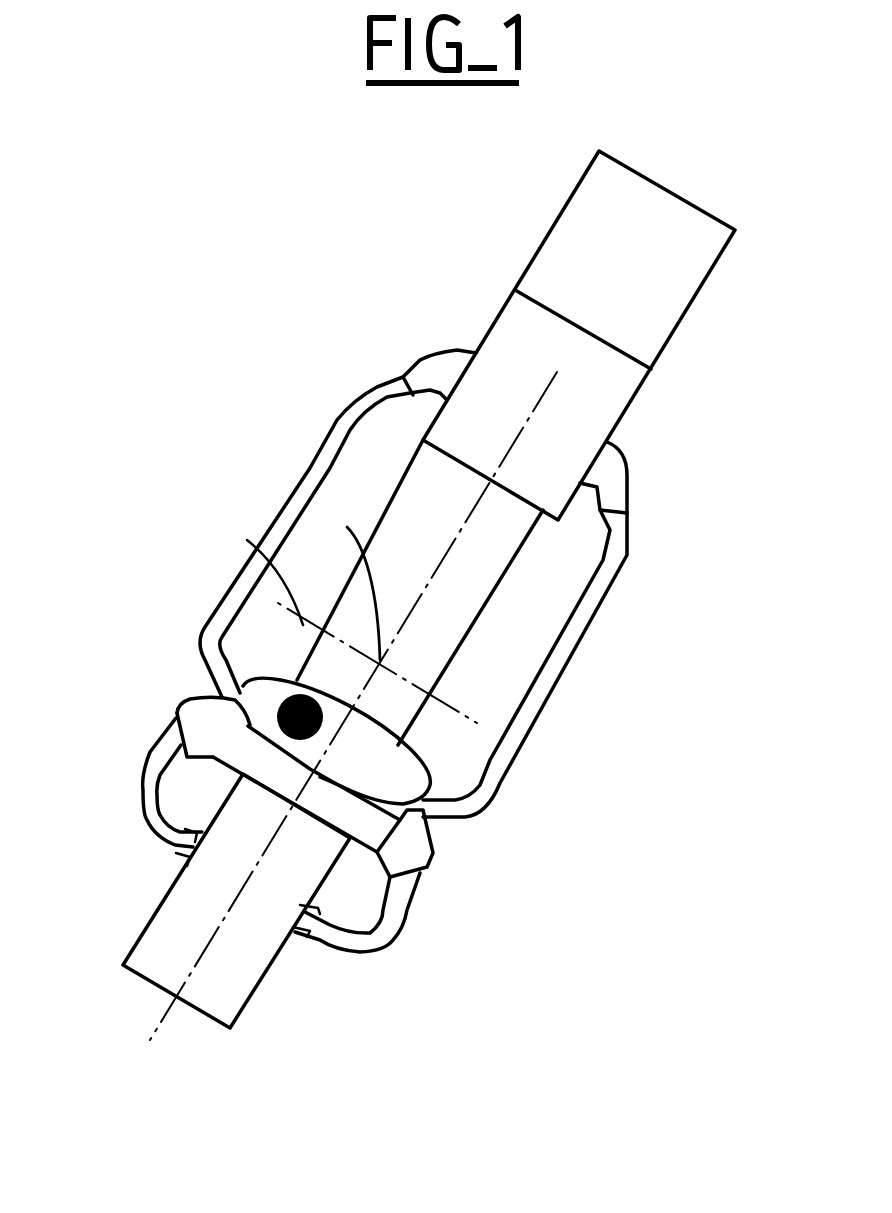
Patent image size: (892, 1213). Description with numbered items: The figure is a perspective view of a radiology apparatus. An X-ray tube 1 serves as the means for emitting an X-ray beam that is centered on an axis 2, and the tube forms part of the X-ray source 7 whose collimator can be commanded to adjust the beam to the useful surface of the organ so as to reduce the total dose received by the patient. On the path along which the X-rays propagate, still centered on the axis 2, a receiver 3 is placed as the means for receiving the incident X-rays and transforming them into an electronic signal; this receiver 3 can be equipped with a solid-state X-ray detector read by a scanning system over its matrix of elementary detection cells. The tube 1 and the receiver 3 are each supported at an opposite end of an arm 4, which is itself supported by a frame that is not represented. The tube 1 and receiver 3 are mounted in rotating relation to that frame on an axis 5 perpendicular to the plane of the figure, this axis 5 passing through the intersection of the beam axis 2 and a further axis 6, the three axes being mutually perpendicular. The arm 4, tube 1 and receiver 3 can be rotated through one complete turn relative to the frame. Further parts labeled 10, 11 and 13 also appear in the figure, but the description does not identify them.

The X-ray tube 1 is at (640, 394).
The axis 2 is at (223, 910).
The receiver 3 is at (177, 715).
The arm 4 is at (413, 537).
The axis 5 is at (347, 527).
The axis 6 is at (247, 540).
The X-ray source 7 is at (213, 693).
The hook 10 is at (437, 820).
The cable 11 is at (287, 677).
The strap 13 is at (205, 629).